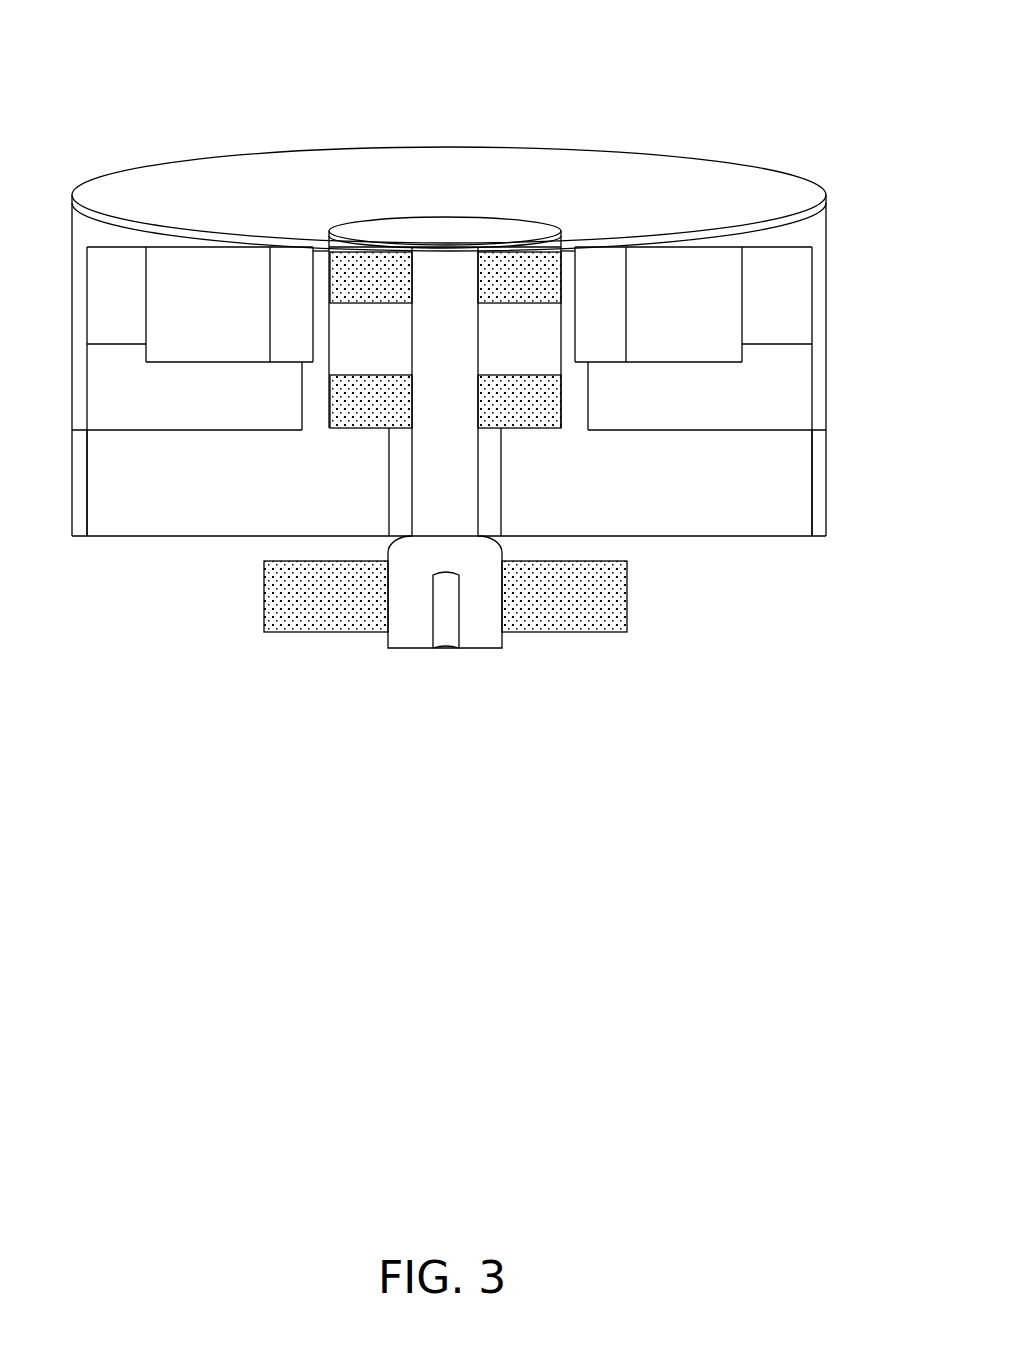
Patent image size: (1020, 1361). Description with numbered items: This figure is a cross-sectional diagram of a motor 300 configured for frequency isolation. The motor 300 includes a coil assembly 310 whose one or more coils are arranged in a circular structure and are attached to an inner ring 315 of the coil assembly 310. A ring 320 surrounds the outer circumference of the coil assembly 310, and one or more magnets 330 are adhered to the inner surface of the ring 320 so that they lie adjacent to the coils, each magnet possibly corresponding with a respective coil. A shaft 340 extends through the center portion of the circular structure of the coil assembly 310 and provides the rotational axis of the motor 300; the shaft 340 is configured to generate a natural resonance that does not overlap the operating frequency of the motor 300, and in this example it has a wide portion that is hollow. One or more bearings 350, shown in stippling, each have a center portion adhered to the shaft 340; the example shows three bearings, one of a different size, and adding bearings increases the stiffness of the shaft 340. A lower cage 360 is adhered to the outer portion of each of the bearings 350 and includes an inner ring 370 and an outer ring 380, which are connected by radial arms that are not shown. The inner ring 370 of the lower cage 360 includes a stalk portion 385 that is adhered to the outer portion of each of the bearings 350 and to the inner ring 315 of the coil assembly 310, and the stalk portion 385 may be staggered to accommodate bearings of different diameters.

The motor 300 is at (162, 104).
The coil assembly 310 is at (708, 293).
The inner ring 315 is at (295, 265).
The ring 320 is at (815, 362).
The magnets 330 is at (97, 293).
The shaft 340 is at (445, 268).
The bearings 350 is at (522, 270).
The lower cage 360 is at (703, 515).
The inner ring 370 is at (398, 481).
The outer ring 380 is at (815, 488).
The stalk portion 385 is at (309, 392).